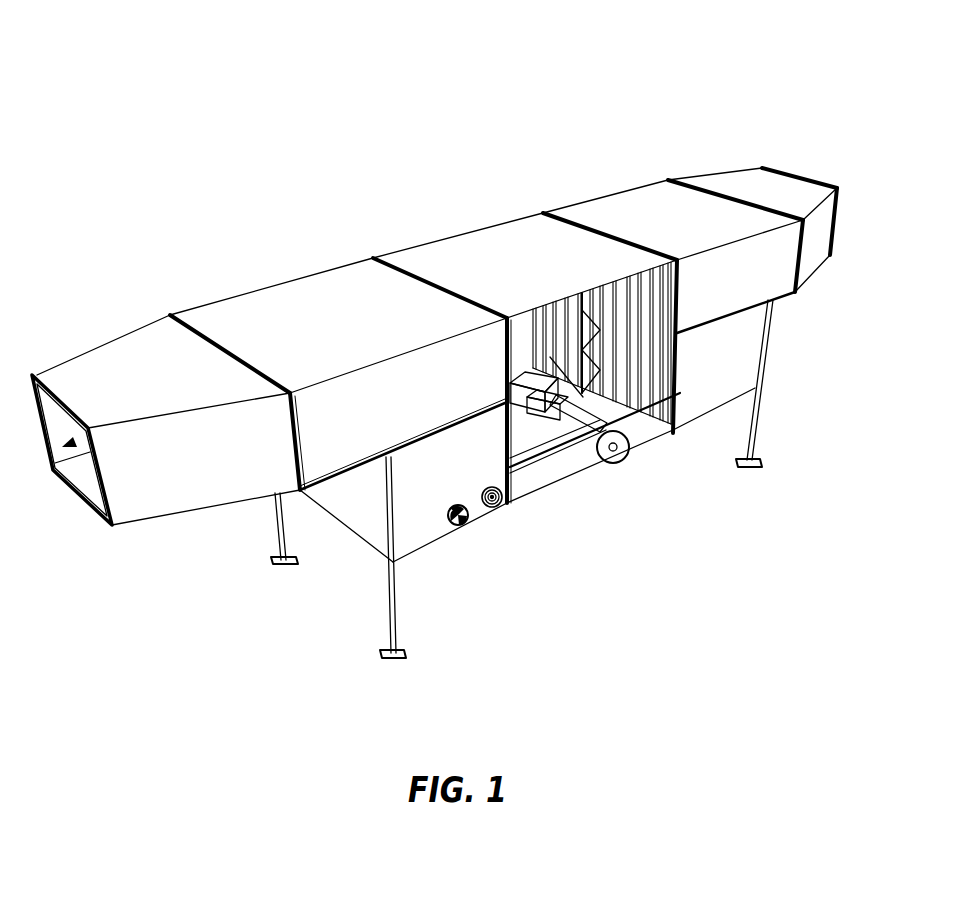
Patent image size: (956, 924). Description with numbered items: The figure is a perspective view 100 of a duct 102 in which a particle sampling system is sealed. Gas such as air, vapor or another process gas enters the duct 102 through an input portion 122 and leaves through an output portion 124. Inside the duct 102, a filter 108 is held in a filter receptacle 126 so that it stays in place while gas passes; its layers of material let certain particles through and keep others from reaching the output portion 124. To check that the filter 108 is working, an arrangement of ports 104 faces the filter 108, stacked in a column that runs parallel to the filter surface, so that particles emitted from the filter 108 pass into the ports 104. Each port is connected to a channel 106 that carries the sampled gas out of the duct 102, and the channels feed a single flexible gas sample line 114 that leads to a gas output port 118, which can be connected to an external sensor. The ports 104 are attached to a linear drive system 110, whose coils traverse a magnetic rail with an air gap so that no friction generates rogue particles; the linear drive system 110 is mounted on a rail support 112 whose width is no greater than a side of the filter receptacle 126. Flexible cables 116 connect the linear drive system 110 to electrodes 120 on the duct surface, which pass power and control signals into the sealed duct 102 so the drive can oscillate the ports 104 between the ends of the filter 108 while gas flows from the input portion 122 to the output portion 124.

The perspective view 100 is at (162, 76).
The duct 102 is at (414, 250).
The ports 104 is at (593, 290).
The channel 106 is at (547, 333).
The filter 108 is at (677, 313).
The linear drive system 110 is at (513, 417).
The rail support 112 is at (630, 447).
The gas sample line 114 is at (567, 443).
The cables 116 is at (527, 440).
The gas output port 118 is at (520, 507).
The electrodes 120 is at (473, 520).
The input portion 122 is at (824, 157).
The output portion 124 is at (52, 458).
The filter receptacle 126 is at (677, 372).